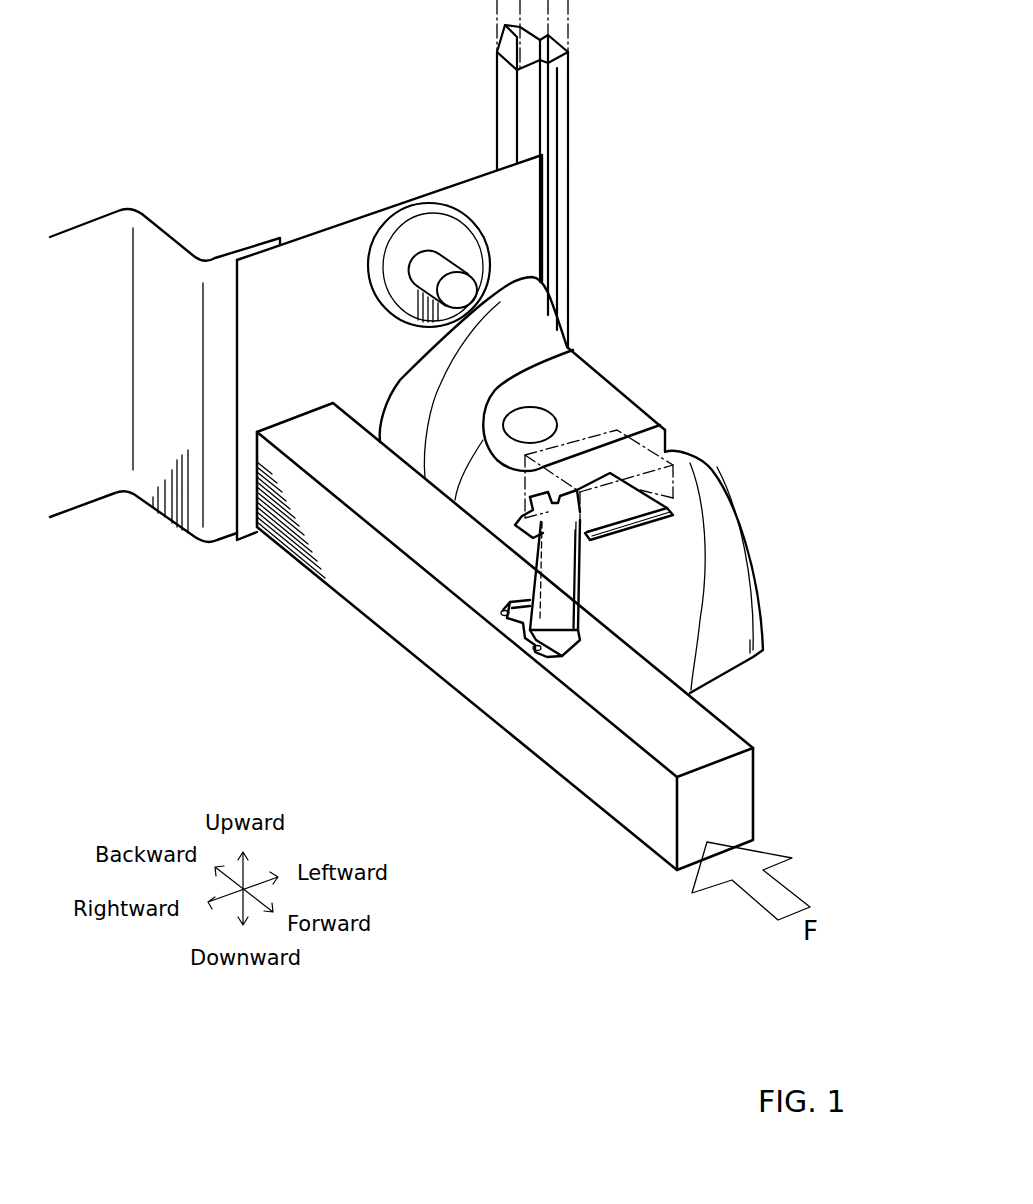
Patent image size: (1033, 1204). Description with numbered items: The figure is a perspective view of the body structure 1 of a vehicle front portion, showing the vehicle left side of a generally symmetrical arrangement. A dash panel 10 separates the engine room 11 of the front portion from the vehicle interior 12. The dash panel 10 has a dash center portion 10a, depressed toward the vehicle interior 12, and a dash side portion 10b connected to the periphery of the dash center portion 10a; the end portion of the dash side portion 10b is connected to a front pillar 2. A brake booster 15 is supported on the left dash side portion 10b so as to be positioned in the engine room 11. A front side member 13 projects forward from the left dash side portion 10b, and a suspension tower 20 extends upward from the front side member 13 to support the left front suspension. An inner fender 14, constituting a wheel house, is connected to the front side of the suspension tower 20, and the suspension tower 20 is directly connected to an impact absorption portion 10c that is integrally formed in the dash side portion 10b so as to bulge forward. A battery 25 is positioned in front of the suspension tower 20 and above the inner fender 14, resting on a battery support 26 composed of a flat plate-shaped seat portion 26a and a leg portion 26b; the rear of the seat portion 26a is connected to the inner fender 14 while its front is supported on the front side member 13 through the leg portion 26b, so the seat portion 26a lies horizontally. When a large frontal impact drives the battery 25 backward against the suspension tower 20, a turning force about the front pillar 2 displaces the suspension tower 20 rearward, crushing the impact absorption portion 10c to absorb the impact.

The body structure 1 is at (288, 126).
The front pillar 2 is at (570, 63).
The dash panel 10 is at (430, 405).
The dash center portion 10a is at (85, 252).
The dash side portion 10b is at (302, 277).
The impact absorption portion 10c is at (471, 394).
The engine room 11 is at (126, 591).
The vehicle interior 12 is at (156, 145).
The front side member 13 is at (577, 753).
The inner fender 14 is at (661, 602).
The brake booster 15 is at (442, 240).
The suspension tower 20 is at (559, 404).
The battery 25 is at (613, 460).
The battery support 26 is at (580, 581).
The seat portion 26a is at (637, 543).
The leg portion 26b is at (553, 582).